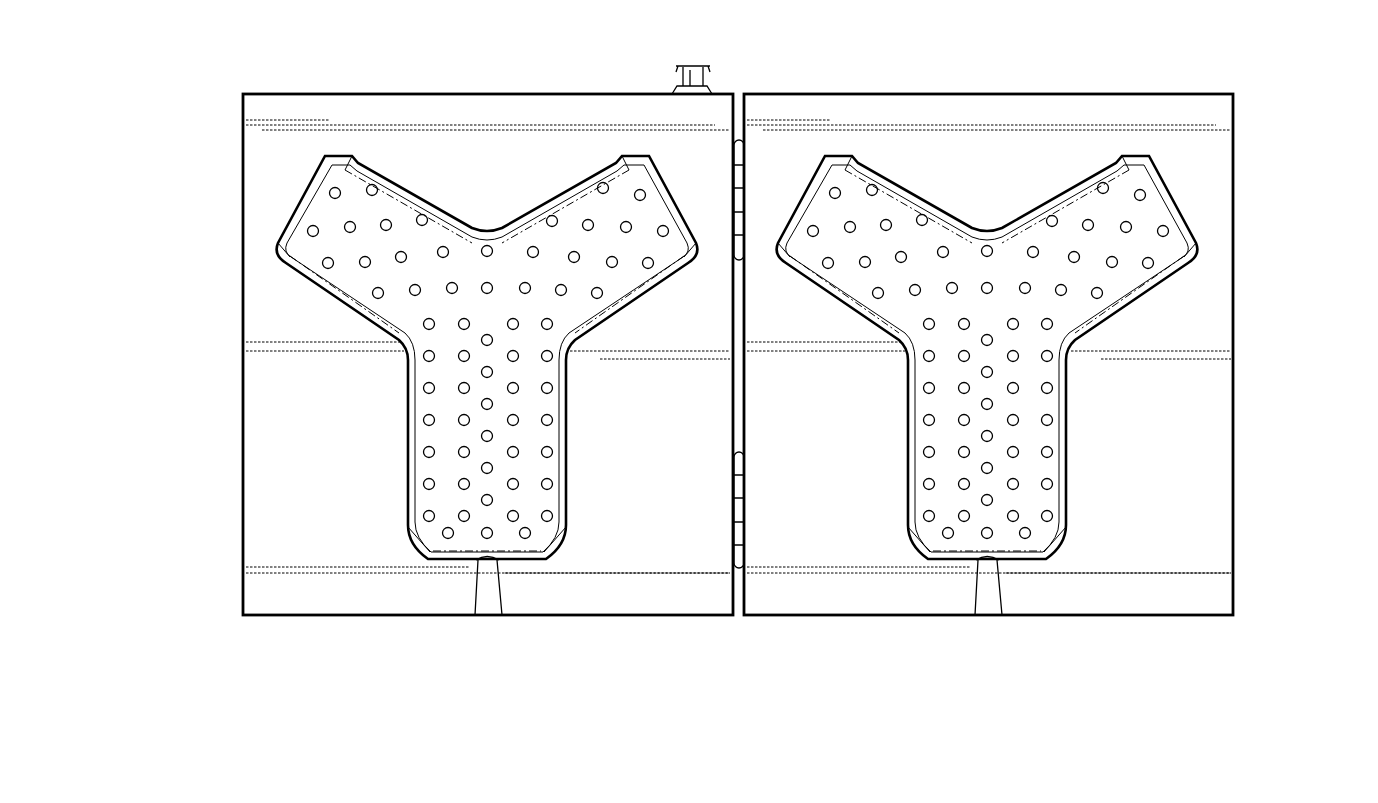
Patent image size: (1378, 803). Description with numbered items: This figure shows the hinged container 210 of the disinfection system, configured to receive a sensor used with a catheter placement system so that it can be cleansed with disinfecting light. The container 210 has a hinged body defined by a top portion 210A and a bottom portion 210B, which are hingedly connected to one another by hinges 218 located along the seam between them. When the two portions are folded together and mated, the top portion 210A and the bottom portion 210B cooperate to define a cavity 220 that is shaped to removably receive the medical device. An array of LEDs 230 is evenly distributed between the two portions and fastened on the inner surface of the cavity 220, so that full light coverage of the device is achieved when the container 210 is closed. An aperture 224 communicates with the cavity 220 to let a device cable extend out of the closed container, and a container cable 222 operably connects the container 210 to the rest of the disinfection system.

The container 210 is at (215, 108).
The top portion 210A is at (262, 200).
The bottom portion 210B is at (1216, 185).
The hinges 218 is at (742, 200).
The cavity 220 is at (428, 185).
The container cable 222 is at (683, 78).
The aperture 224 is at (490, 608).
The LEDs 230 is at (424, 515).